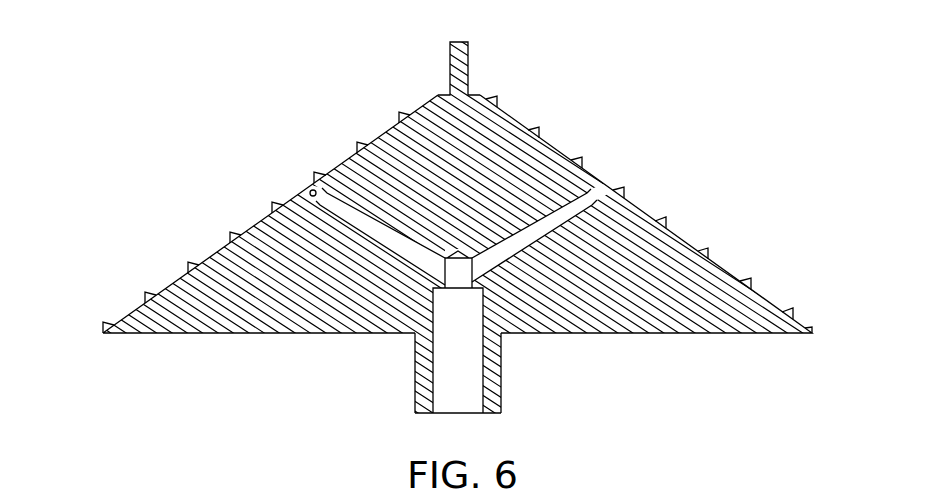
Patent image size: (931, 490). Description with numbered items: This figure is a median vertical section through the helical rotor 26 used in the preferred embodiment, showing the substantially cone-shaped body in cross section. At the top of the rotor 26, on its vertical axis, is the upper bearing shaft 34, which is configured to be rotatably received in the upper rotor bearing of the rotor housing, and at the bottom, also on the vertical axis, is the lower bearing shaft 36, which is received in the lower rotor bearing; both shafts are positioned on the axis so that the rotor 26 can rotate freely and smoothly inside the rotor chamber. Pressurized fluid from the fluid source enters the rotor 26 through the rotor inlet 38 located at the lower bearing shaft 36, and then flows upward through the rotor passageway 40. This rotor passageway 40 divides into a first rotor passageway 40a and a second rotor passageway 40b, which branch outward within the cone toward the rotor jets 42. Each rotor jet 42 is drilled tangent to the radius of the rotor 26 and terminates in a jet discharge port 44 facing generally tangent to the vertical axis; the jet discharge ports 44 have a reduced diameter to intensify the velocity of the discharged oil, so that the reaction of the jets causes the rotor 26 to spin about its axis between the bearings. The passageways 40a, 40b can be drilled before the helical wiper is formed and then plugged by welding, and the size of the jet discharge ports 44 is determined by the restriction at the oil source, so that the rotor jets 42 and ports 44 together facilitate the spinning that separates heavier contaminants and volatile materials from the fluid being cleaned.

The rotor 26 is at (542, 60).
The upper bearing shaft 34 is at (450, 58).
The lower bearing shaft 36 is at (415, 367).
The rotor inlet 38 is at (462, 413).
The rotor passageway 40 is at (462, 367).
The first rotor passageway 40a is at (363, 222).
The second rotor passageway 40b is at (573, 208).
The rotor jet 42 is at (303, 188).
The jet discharge port 44 is at (720, 245).